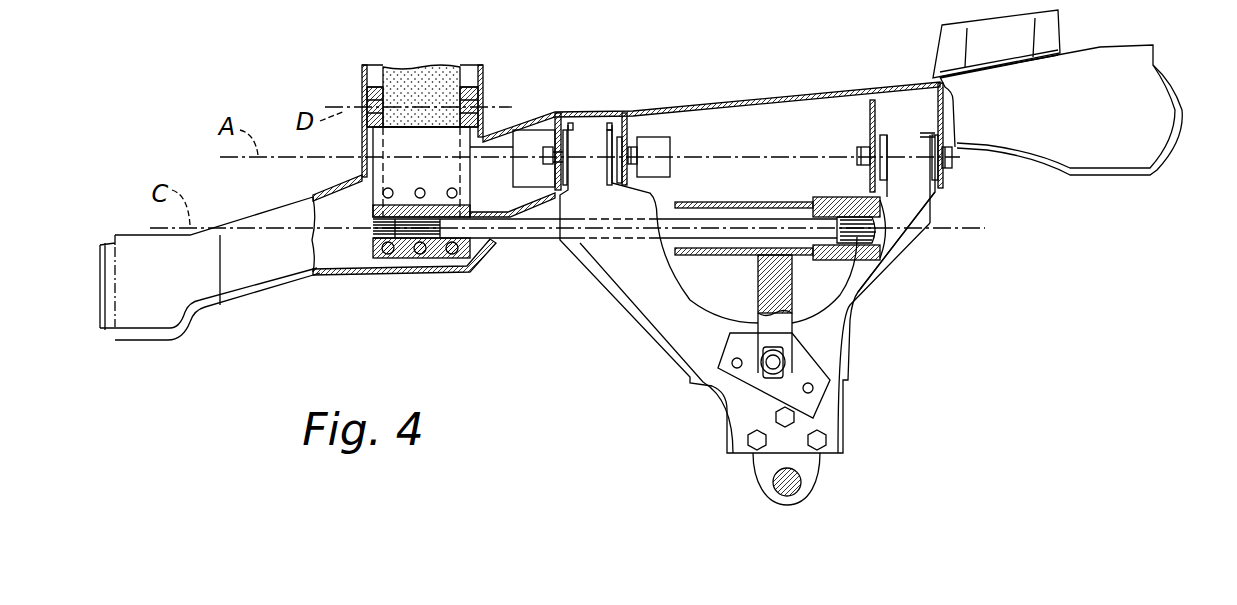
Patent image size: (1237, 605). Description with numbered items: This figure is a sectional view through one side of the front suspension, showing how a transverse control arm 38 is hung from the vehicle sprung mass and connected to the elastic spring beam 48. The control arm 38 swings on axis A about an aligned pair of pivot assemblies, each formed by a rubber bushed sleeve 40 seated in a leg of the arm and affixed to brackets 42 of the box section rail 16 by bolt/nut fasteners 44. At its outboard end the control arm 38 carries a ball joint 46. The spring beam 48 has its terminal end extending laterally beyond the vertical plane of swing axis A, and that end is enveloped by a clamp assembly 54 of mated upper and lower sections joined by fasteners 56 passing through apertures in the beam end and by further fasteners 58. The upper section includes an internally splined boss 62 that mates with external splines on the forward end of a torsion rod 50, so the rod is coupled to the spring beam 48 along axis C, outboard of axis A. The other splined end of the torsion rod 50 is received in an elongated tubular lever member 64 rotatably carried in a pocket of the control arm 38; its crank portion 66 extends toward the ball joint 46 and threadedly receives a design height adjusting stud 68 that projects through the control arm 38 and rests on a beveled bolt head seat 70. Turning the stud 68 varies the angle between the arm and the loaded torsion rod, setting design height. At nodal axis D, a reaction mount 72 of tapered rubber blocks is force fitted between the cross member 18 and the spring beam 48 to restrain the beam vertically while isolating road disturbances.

The box section rail 16 is at (765, 102).
The cross member 18 is at (483, 82).
The transverse control arm 38 is at (690, 328).
The rubber bushed sleeve 40 is at (558, 112).
The bracket 42 is at (628, 175).
The bolt/nut fastener 44 is at (633, 143).
The ball joint 46 is at (800, 482).
The spring beam 48 is at (403, 78).
The torsion rod 50 is at (527, 242).
The clamp assembly 54 is at (382, 262).
The fastener 56 is at (385, 192).
The further fastener 58 is at (448, 262).
The boss 62 is at (408, 262).
The tubular lever member 64 is at (730, 253).
The crank portion 66 is at (853, 293).
The design height adjusting stud 68 is at (785, 362).
The beveled bolt head seat 70 is at (813, 407).
The reaction mount 72 is at (367, 93).